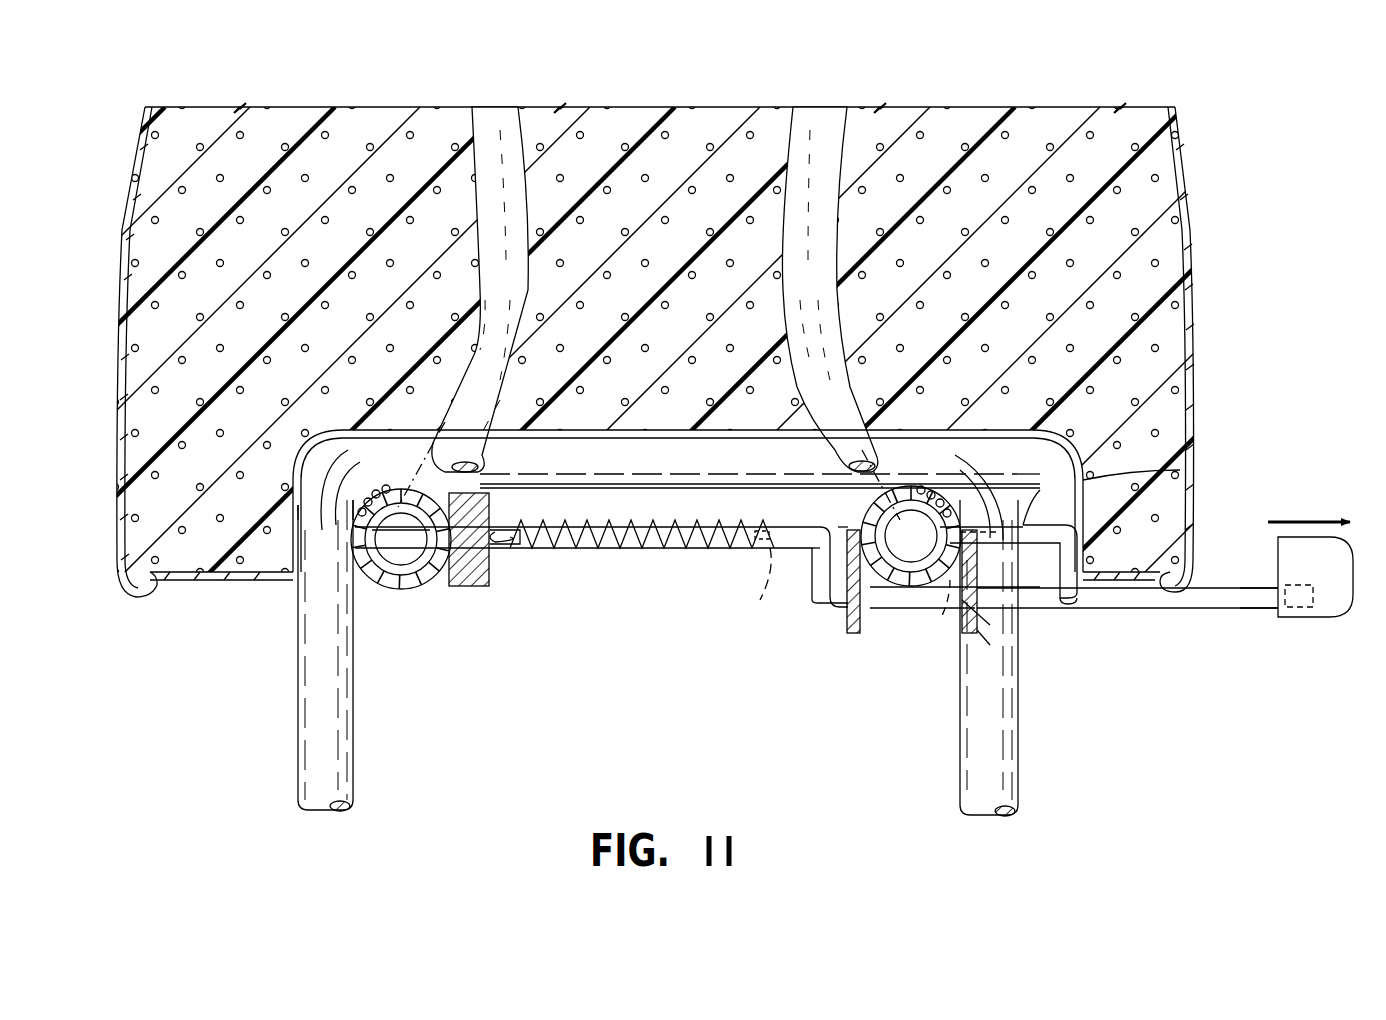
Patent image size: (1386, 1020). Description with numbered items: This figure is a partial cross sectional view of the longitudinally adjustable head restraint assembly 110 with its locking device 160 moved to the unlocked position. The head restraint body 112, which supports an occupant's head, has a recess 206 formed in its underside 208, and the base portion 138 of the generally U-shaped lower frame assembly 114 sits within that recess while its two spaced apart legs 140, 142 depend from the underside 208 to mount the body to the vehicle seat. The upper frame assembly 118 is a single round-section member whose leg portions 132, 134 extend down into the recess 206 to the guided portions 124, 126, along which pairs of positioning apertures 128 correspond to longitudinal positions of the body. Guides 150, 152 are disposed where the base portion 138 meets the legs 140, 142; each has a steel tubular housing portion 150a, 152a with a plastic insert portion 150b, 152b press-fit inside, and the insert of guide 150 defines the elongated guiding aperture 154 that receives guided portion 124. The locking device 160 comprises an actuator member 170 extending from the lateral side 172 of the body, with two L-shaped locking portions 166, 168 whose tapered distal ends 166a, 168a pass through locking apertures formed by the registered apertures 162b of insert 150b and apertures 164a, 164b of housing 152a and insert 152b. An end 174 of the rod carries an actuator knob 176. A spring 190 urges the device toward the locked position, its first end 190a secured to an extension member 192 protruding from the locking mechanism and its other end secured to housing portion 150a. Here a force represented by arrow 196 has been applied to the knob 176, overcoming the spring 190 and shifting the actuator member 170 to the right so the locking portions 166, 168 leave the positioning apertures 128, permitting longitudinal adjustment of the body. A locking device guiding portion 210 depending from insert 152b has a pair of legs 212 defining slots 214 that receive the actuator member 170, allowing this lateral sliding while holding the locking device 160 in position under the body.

The head restraint assembly 110 is at (1235, 128).
The head restraint body 112 is at (1195, 228).
The lower frame assembly 114 is at (295, 745).
The upper frame assembly 118 is at (462, 168).
The guided portion 124 is at (394, 510).
The guided portion 126 is at (916, 500).
The positioning apertures 128 is at (355, 532).
The leg portion 132 is at (500, 118).
The leg portion 134 is at (828, 112).
The base portion 138 is at (588, 432).
The leg 140 is at (316, 790).
The leg 142 is at (1010, 785).
The guide 150 is at (500, 590).
The tubular housing portion 150a is at (367, 587).
The insert portion 150b is at (408, 585).
The guide 152 is at (845, 640).
The tubular housing portion 152a is at (895, 590).
The insert portion 152b is at (910, 588).
The guiding aperture 154 is at (462, 588).
The locking device 160 is at (840, 626).
The aperture 162b is at (480, 595).
The aperture 164a is at (968, 505).
The aperture 164b is at (842, 527).
The locking portion 166 is at (570, 550).
The distal end 166a is at (502, 537).
The locking portion 168 is at (1040, 522).
The distal end 168a is at (1078, 468).
The actuator member 170 is at (1115, 608).
The lateral side 172 is at (1193, 475).
The end 174 is at (1268, 608).
The actuator knob 176 is at (1325, 595).
The spring 190 is at (667, 550).
The first end 190a is at (817, 597).
The extension member 192 is at (770, 548).
The arrow 196 is at (1318, 518).
The recess 206 is at (635, 432).
The underside 208 is at (206, 583).
The locking device guiding portion 210 is at (985, 645).
The legs 212 is at (853, 640).
The slots 214 is at (990, 622).